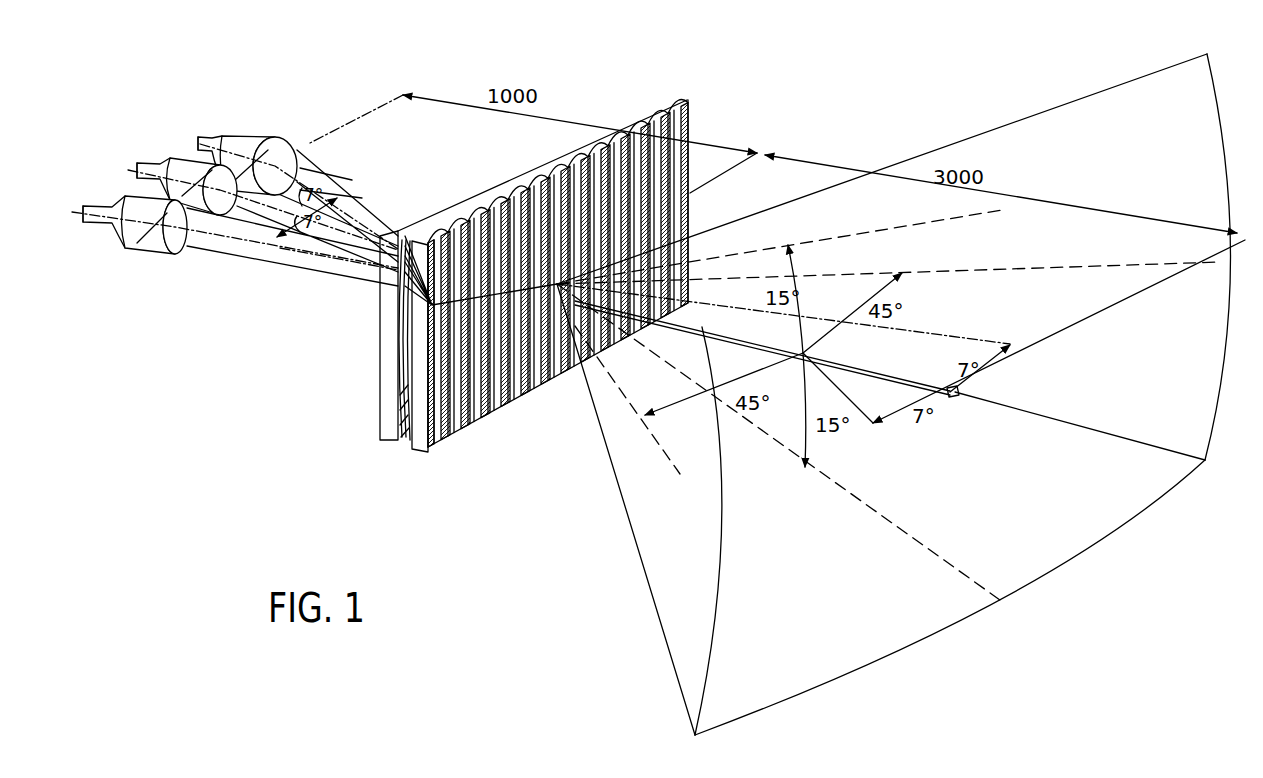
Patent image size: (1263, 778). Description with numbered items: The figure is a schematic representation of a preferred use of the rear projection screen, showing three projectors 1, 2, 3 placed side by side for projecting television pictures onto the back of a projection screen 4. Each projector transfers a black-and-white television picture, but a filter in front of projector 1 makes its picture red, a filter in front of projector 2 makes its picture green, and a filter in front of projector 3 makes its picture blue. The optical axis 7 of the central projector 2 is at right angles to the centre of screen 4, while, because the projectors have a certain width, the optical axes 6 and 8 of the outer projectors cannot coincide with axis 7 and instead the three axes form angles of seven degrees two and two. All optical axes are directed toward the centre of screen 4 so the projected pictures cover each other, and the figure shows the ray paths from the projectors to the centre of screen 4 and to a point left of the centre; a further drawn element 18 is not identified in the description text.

The projector 1 is at (206, 134).
The projector 2 is at (140, 160).
The projector 3 is at (82, 204).
The projection screen 4 is at (664, 101).
The optical axis 6 is at (855, 412).
The optical axis 7 is at (362, 199).
The optical axis 8 is at (347, 258).
The Fresnel lens plate 18 is at (430, 305).